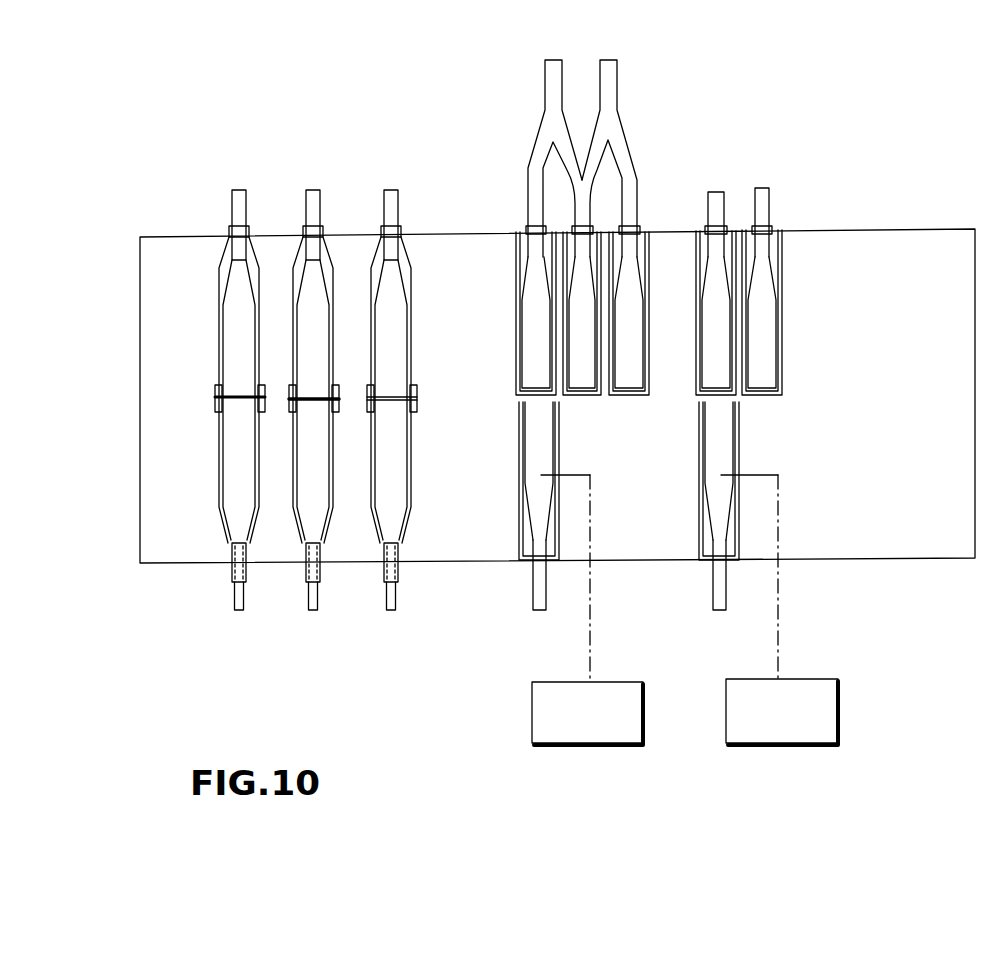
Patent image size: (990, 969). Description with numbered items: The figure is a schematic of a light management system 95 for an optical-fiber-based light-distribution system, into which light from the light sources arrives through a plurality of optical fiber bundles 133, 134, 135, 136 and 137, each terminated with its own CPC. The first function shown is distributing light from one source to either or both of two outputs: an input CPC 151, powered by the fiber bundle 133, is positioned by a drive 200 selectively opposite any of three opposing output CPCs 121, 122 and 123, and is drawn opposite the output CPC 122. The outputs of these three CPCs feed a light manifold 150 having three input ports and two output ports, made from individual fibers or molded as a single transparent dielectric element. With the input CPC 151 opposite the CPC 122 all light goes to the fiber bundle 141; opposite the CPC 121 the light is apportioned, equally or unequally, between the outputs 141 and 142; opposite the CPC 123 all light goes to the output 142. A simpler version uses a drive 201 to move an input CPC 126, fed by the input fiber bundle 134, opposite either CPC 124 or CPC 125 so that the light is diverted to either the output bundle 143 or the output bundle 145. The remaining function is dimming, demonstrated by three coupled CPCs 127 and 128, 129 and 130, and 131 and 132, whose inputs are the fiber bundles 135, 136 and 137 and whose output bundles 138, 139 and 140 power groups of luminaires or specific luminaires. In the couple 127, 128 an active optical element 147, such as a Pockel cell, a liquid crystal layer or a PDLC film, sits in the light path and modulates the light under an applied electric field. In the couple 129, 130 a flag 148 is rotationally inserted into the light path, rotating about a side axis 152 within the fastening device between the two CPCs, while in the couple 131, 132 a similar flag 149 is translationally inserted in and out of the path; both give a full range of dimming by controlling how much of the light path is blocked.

The light management system 95 is at (858, 172).
The output CPC 121 is at (585, 353).
The output CPC 122 is at (514, 272).
The output CPC 123 is at (641, 292).
The CPC 124 is at (718, 323).
The CPC 125 is at (768, 322).
The input CPC 126 is at (724, 434).
The CPC 127 is at (242, 437).
The CPC 128 is at (215, 288).
The CPC 129 is at (317, 445).
The CPC 130 is at (292, 290).
The CPC 131 is at (393, 482).
The CPC 132 is at (412, 313).
The optical fiber bundle 133 is at (538, 583).
The optical fiber bundle 134 is at (720, 576).
The optical fiber bundle 135 is at (234, 572).
The optical fiber bundle 136 is at (307, 572).
The optical fiber bundle 137 is at (385, 572).
The output bundle 138 is at (236, 192).
The output bundle 139 is at (312, 190).
The output bundle 140 is at (386, 190).
The fiber bundle 141 is at (547, 78).
The output 142 is at (612, 72).
The output bundle 143 is at (718, 192).
The output bundle 145 is at (770, 190).
The active optical element 147 is at (240, 397).
The flag 148 is at (311, 395).
The flag 149 is at (413, 390).
The light manifold 150 is at (567, 180).
The input CPC 151 is at (557, 470).
The side axis 152 is at (289, 403).
The drive 200 is at (637, 745).
The drive 201 is at (824, 745).